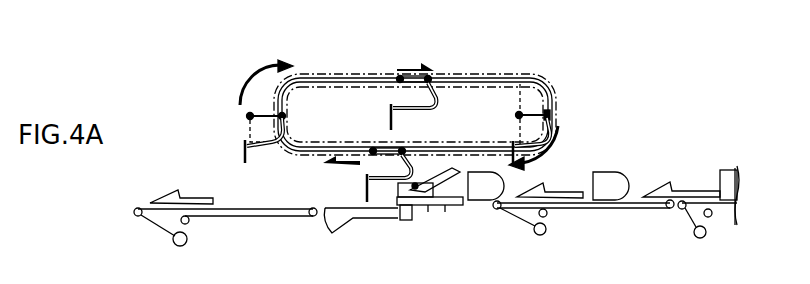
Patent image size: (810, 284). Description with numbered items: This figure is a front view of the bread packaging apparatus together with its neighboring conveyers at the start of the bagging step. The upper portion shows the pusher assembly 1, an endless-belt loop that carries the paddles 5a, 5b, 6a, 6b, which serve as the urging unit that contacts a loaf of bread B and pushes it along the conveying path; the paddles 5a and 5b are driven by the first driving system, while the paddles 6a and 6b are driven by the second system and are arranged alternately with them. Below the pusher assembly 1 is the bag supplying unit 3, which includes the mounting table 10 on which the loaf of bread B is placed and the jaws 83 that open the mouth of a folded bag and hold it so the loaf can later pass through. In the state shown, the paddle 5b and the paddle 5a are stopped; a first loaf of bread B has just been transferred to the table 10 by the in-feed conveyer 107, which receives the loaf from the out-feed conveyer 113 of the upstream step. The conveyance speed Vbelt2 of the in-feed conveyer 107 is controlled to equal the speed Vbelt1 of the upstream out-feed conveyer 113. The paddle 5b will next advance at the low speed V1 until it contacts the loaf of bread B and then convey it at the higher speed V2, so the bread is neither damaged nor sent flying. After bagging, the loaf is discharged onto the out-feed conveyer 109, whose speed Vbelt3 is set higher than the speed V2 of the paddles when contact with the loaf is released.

The pusher assembly 1 is at (563, 58).
The bag supplying unit 3 is at (428, 211).
The paddle 5a is at (243, 147).
The paddle 5b is at (504, 163).
The paddle 6a is at (366, 191).
The paddle 6b is at (387, 122).
The mounting table 10 is at (473, 206).
The jaws 83 is at (420, 184).
The in-feed conveyer 107 is at (596, 145).
The out-feed conveyer 109 is at (212, 152).
The out-feed conveyer 113 is at (707, 151).
The loaf of bread B is at (612, 182).
The speed V1 is at (400, 114).
The speed V2 is at (378, 118).
The conveyance speed Vbelt1 is at (691, 202).
The conveyance speed Vbelt2 is at (583, 205).
The conveyance speed Vbelt3 is at (225, 213).